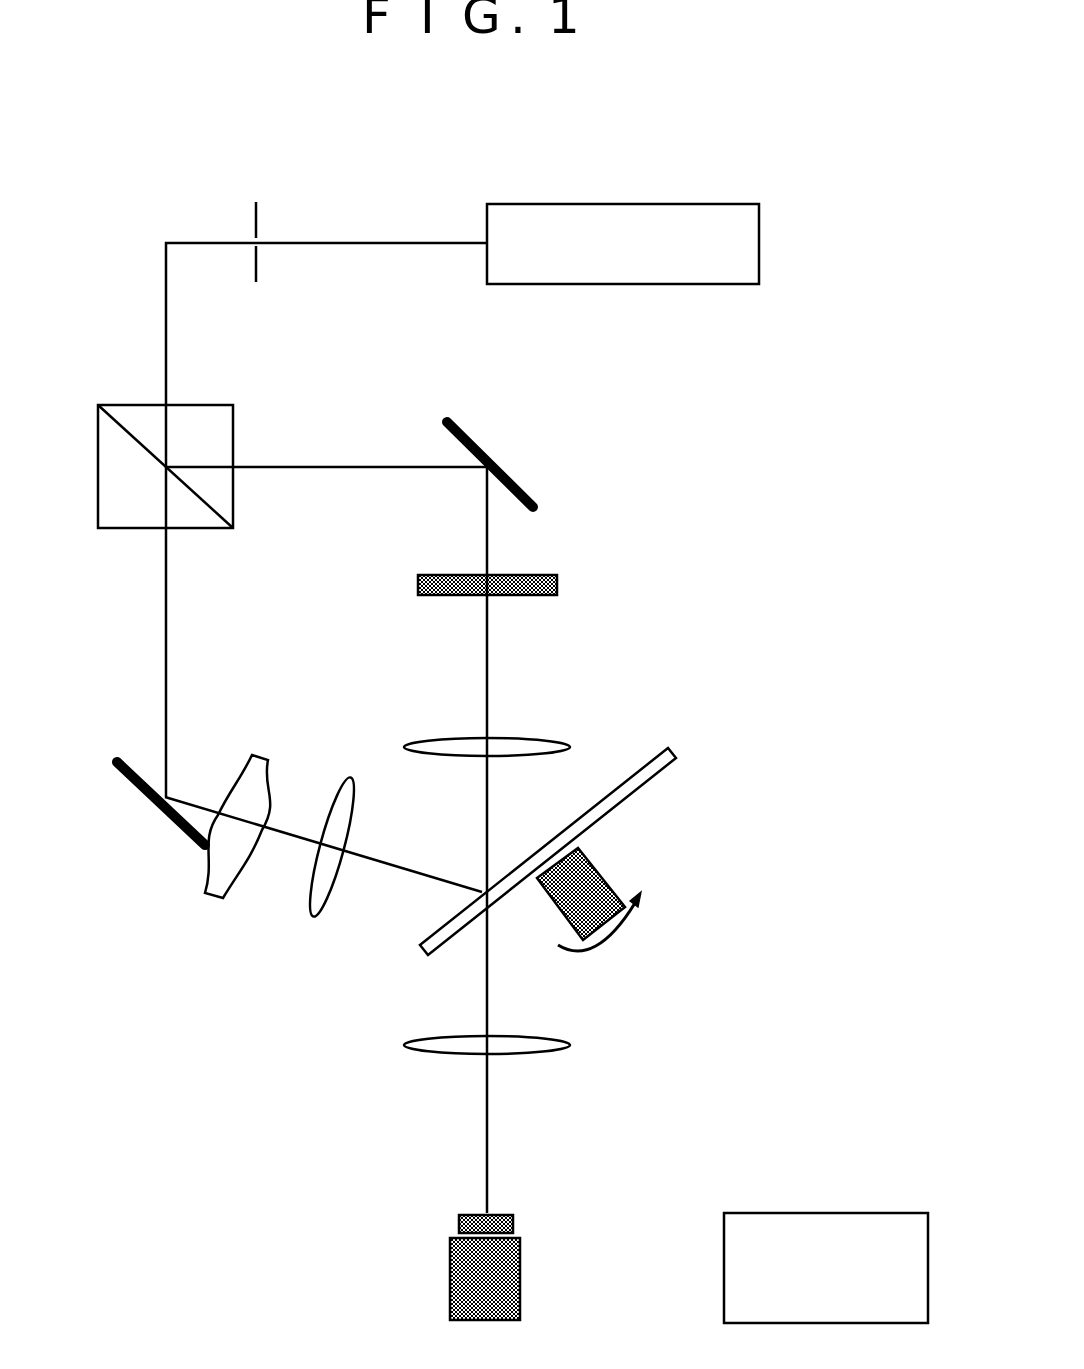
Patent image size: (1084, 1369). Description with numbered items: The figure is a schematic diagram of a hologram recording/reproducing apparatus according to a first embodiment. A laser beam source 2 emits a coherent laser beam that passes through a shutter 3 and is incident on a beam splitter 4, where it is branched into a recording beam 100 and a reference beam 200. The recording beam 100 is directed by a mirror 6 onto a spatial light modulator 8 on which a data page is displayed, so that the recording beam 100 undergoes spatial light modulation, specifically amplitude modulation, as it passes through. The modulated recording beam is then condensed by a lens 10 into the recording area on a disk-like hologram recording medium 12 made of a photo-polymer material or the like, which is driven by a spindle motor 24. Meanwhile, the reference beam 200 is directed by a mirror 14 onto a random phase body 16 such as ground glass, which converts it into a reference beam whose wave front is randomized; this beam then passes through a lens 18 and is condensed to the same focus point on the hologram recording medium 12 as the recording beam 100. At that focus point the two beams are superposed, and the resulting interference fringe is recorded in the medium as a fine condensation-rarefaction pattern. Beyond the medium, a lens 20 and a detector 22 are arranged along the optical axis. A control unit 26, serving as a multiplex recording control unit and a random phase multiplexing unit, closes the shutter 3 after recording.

The laser beam source 2 is at (759, 242).
The shutter 3 is at (257, 220).
The beam splitter 4 is at (233, 405).
The mirror 6 is at (490, 462).
The spatial light modulator 8 is at (557, 583).
The lens 10 is at (522, 740).
The hologram recording medium 12 is at (672, 750).
The mirror 14 is at (152, 800).
The random phase body 16 is at (209, 882).
The lens 18 is at (305, 917).
The lens 20 is at (420, 1052).
The detector 22 is at (520, 1265).
The spindle motor 24 is at (612, 883).
The control unit 26 is at (815, 1213).
The recording beam 100 is at (262, 466).
The reference beam 200 is at (163, 548).